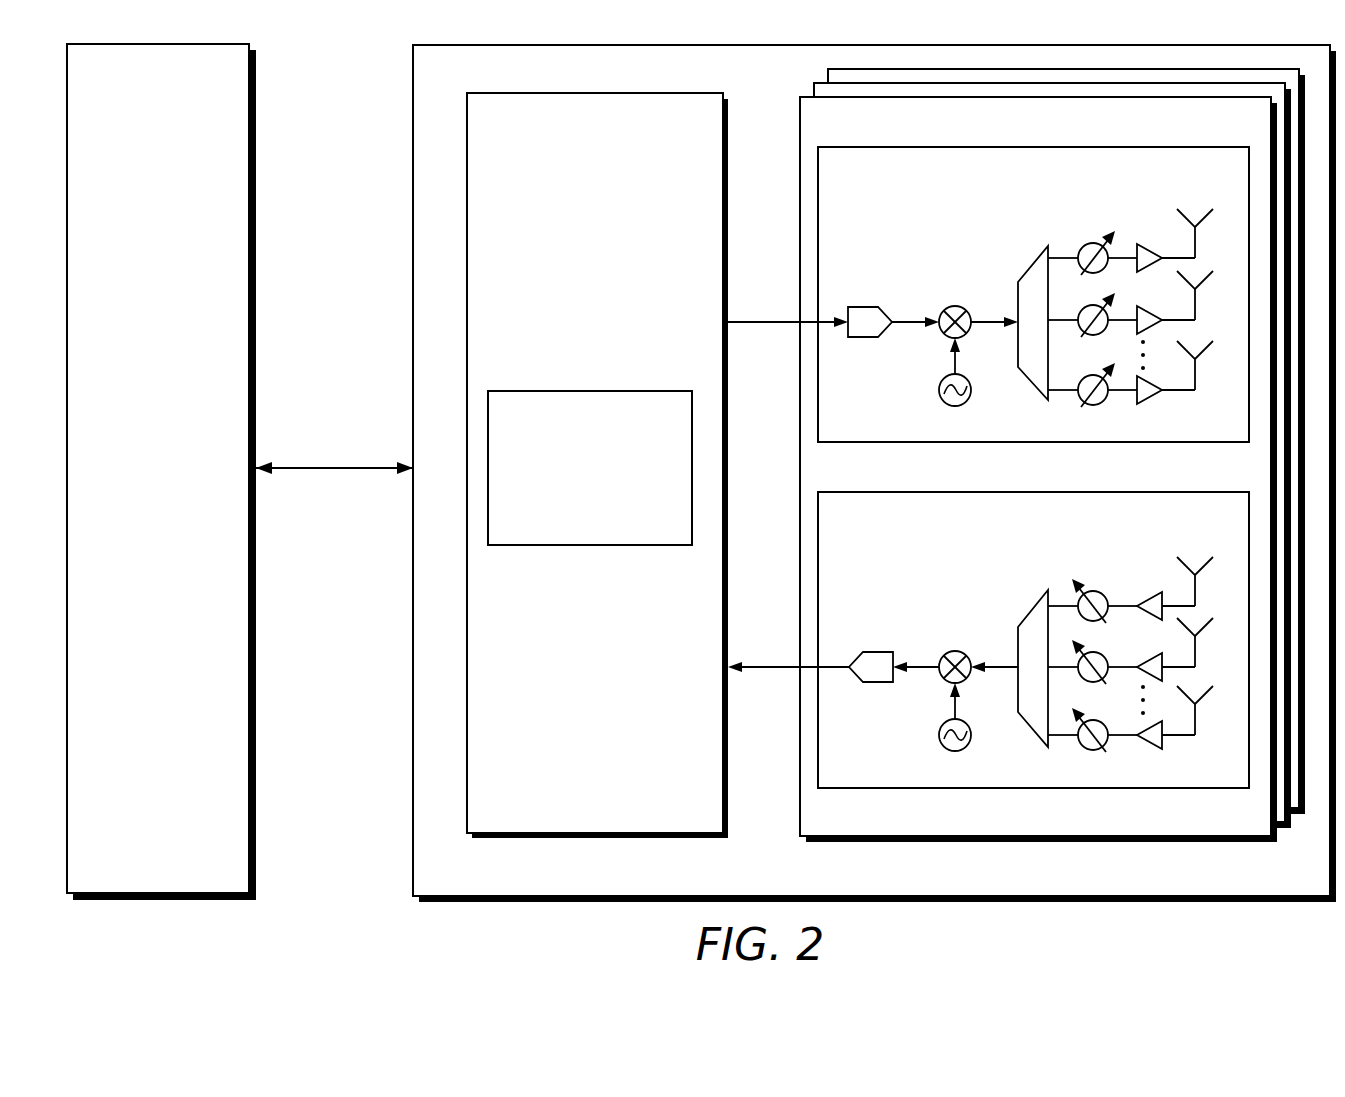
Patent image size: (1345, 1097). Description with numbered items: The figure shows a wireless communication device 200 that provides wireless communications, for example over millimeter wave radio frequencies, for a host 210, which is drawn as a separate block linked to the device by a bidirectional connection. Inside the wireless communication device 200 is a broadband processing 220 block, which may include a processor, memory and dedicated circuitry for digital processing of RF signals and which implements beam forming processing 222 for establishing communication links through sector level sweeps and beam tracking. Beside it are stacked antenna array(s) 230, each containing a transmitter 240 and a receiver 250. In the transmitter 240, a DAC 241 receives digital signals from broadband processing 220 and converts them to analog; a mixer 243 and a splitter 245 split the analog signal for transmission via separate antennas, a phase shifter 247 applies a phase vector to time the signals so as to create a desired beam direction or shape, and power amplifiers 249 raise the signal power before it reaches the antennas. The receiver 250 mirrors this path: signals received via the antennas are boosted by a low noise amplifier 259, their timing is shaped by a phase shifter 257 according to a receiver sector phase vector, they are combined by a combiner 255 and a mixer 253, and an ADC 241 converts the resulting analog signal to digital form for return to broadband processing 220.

The wireless communication device 200 is at (874, 473).
The host 210 is at (161, 472).
The broadband processing 220 is at (597, 465).
The beam forming processing 222 is at (590, 468).
The antenna array(s) 230 is at (1052, 455).
The transmitter 240 is at (988, 294).
The digital to analog converter (DAC) / analog to digital converter (ADC) 241 is at (869, 462).
The mixer 243 is at (941, 324).
The splitter 245 is at (1024, 304).
The phase shifter 247 is at (1091, 287).
The power amplifier (PA) 249 is at (1160, 286).
The receiver 250 is at (988, 640).
The mixer 253 is at (941, 672).
The combiner 255 is at (1024, 650).
The phase shifter 257 is at (1091, 629).
The low noise amplifier (LNA) 259 is at (1160, 632).